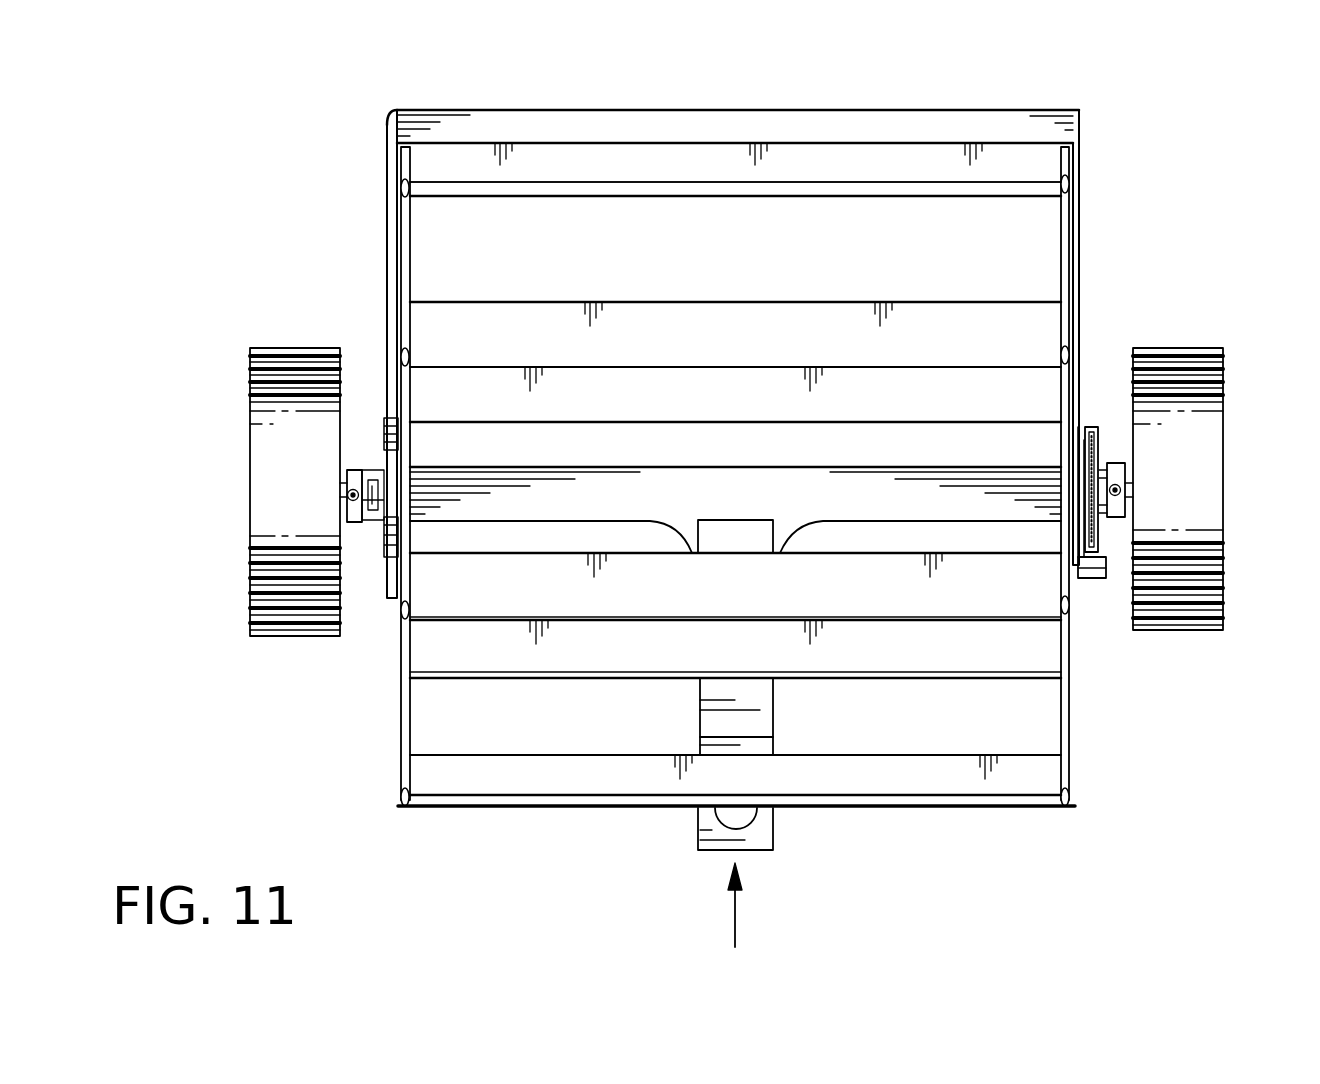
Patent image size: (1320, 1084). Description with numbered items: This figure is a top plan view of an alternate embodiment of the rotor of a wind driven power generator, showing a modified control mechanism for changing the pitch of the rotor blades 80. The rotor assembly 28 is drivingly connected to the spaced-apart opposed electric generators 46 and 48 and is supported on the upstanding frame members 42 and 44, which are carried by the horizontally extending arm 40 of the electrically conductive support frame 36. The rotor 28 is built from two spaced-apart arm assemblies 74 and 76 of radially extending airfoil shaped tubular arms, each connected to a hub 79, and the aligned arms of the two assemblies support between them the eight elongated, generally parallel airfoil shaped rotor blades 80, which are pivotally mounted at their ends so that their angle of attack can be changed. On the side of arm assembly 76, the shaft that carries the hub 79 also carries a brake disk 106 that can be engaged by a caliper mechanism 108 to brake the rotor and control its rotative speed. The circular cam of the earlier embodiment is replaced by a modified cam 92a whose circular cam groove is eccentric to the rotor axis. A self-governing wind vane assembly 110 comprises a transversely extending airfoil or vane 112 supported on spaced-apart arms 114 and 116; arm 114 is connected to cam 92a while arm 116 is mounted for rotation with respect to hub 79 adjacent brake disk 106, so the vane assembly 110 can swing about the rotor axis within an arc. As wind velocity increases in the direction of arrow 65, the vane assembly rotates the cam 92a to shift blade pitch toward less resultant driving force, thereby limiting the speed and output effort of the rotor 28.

The rotor 28 is at (842, 155).
The frame 36 is at (700, 693).
The arm 40 is at (775, 720).
The frame member 42 is at (357, 470).
The frame member 44 is at (1113, 463).
The electric generator 46 is at (268, 637).
The electric generator 48 is at (1215, 633).
The arrow 65 is at (735, 918).
The arm assembly 74 is at (411, 277).
The arm assembly 76 is at (1060, 227).
The hub 79 is at (1060, 530).
The rotor blades 80 is at (725, 170).
The cam 92a is at (383, 592).
The brake disk 106 is at (1085, 432).
The caliper mechanism 108 is at (1093, 580).
The wind vane assembly 110 is at (735, 375).
The vane 112 is at (552, 110).
The arm 114 is at (387, 234).
The arm 116 is at (1080, 232).